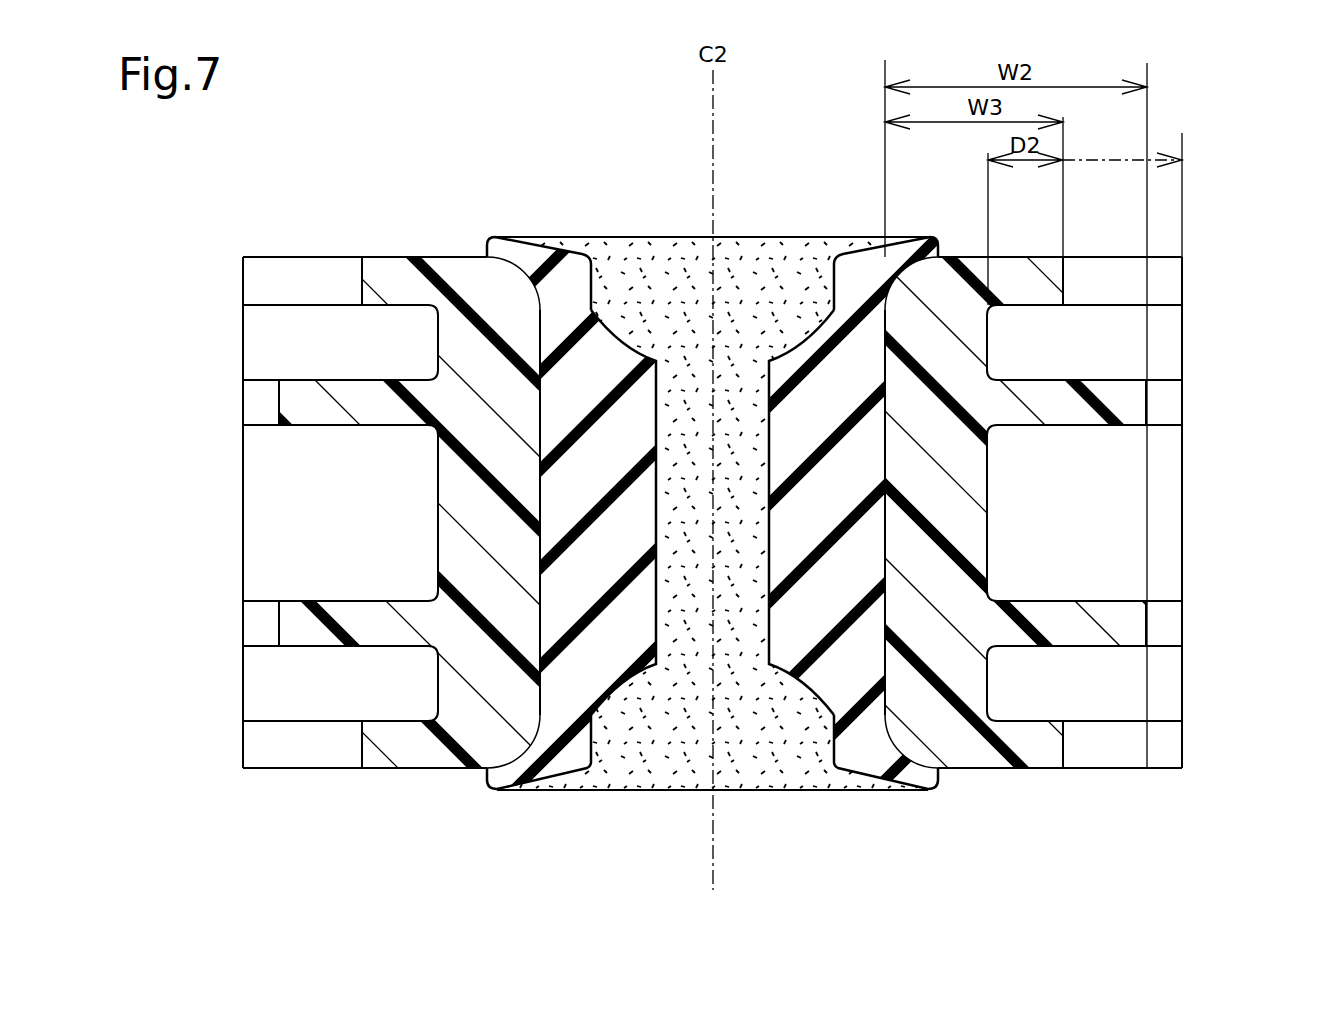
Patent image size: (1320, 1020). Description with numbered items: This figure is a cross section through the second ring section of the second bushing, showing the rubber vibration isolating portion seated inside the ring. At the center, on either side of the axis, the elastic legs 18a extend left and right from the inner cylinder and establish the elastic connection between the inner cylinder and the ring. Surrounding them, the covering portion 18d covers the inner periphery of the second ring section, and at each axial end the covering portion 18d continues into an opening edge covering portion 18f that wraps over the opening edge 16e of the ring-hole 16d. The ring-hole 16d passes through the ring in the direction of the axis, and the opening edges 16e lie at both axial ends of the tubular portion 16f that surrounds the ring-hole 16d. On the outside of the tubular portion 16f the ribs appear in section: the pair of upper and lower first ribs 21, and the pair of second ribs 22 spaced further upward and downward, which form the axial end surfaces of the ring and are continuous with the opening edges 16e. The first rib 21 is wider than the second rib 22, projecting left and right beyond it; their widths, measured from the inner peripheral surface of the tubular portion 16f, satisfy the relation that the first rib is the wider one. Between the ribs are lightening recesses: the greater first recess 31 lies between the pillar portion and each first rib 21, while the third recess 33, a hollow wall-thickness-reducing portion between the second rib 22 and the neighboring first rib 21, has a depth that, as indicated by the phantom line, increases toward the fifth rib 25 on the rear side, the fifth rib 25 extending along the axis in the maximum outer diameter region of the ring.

The ring-hole 16d is at (537, 635).
The opening edge 16e is at (460, 257).
The tubular portion 16f is at (477, 725).
The elastic leg 18a is at (590, 240).
The covering portion 18d is at (563, 302).
The opening edge covering portion 18f is at (495, 237).
The first rib 21 is at (298, 405).
The second rib 22 is at (385, 257).
The fifth rib 25 is at (243, 478).
The first recess 31 is at (282, 552).
The third recess 33 is at (308, 323).